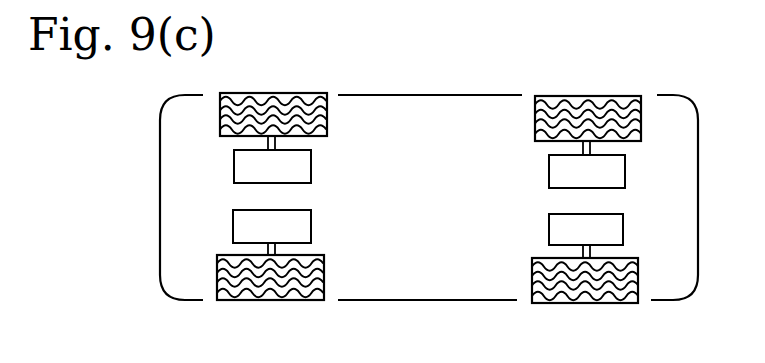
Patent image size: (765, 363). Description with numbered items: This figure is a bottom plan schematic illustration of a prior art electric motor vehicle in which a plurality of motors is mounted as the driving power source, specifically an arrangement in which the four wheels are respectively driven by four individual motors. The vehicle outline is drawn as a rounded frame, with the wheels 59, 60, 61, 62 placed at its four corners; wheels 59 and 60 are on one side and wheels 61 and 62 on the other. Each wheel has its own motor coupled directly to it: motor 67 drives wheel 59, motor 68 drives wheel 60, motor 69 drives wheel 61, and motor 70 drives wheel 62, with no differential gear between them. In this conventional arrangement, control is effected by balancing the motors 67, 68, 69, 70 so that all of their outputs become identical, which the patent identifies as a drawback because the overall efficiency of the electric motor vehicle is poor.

The wheel 59 is at (277, 93).
The wheel 60 is at (280, 300).
The wheel 61 is at (571, 96).
The wheel 62 is at (610, 303).
The motor 67 is at (286, 178).
The motor 68 is at (259, 238).
The motor 69 is at (574, 183).
The motor 70 is at (573, 241).